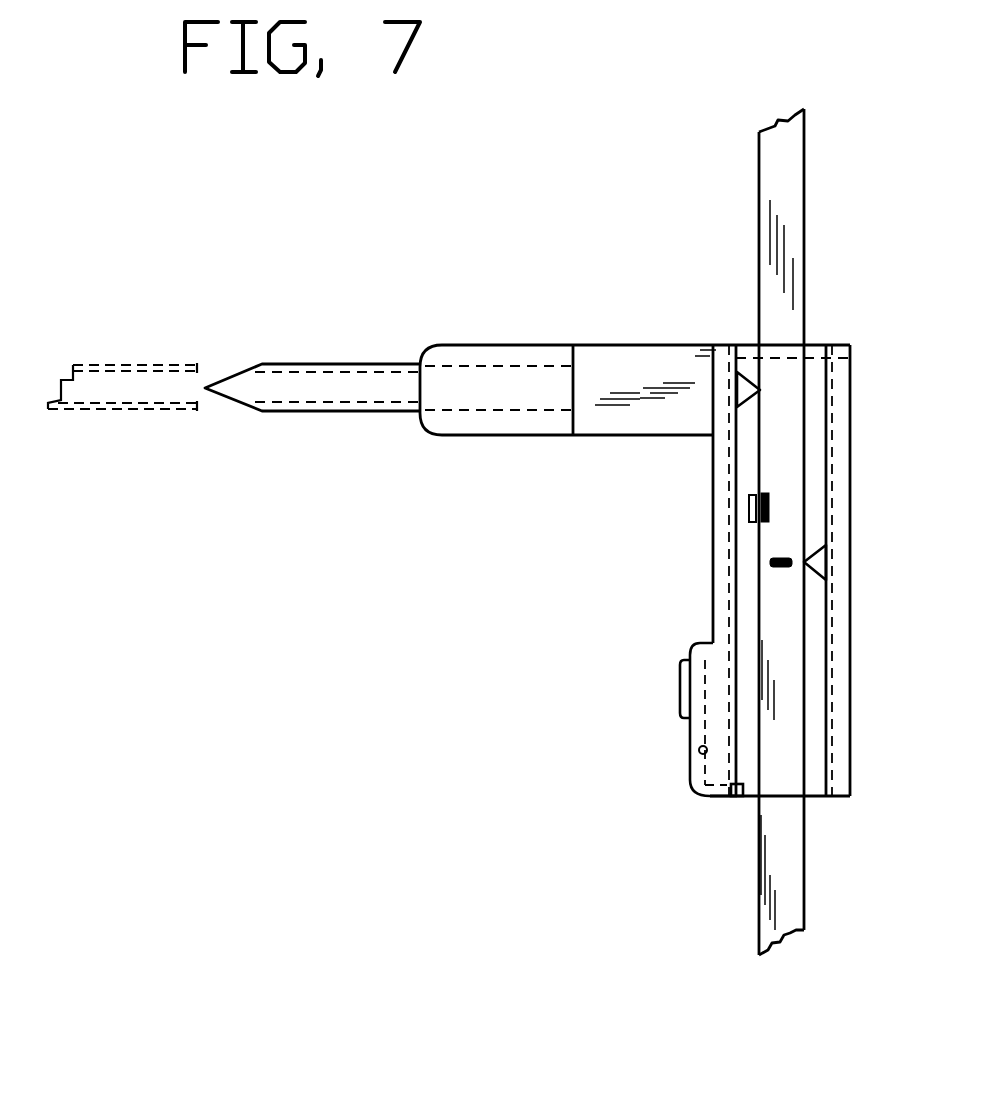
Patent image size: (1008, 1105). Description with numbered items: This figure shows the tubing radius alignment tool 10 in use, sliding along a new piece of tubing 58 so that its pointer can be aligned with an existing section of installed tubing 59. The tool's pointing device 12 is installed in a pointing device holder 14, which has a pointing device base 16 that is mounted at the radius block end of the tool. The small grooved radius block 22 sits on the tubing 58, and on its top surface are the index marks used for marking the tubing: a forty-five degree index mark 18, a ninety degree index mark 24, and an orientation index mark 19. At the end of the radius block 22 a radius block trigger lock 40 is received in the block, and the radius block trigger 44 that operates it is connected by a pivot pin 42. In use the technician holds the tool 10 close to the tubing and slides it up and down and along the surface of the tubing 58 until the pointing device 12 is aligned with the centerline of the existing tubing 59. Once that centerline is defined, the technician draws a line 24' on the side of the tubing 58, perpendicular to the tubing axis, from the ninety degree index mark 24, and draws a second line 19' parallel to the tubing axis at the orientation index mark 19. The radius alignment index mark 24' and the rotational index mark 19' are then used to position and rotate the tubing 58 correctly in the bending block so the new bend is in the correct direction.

The tubing radius alignment tool 10 is at (455, 438).
The pointing device 12 is at (320, 350).
The pointing device holder 14 is at (525, 345).
The pointing device base 16 is at (628, 345).
The 45-degree index mark 18 is at (738, 390).
The orientation index mark 19 is at (676, 518).
The rotational index mark 19' is at (682, 545).
The grooved radius block 22 is at (850, 420).
The 90-degree index mark 24 is at (858, 535).
The radius alignment index mark 24' is at (846, 615).
The radius block trigger lock 40 is at (740, 797).
The pivot pin 42 is at (700, 753).
The radius block trigger 44 is at (680, 696).
The tubing 58 is at (759, 190).
The installed tubing 59 is at (187, 413).